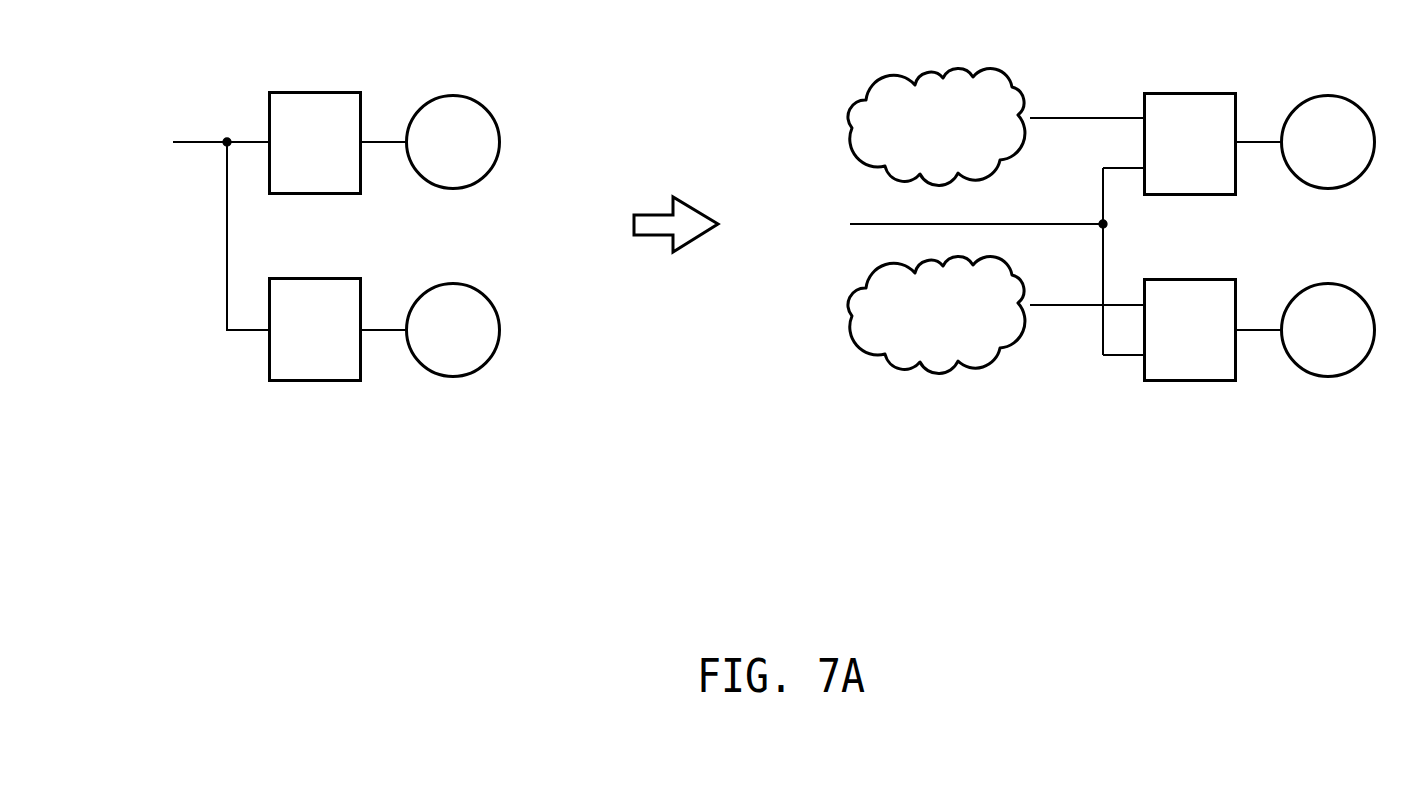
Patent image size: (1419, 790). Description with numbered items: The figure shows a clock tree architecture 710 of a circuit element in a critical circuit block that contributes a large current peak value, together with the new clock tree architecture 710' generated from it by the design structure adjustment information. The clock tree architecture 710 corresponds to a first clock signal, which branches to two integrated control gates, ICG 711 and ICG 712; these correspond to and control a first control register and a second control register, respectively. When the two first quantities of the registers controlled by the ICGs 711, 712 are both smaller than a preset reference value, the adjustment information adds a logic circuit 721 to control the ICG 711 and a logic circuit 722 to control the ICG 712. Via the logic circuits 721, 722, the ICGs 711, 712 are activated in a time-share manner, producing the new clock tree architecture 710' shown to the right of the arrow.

The clock tree architecture 710 is at (321, 302).
The new clock tree architecture 710' is at (1098, 302).
The integrated control gate 711 is at (317, 91).
The integrated control gate 712 is at (317, 277).
The logic circuit 721 is at (983, 173).
The logic circuit 722 is at (983, 360).